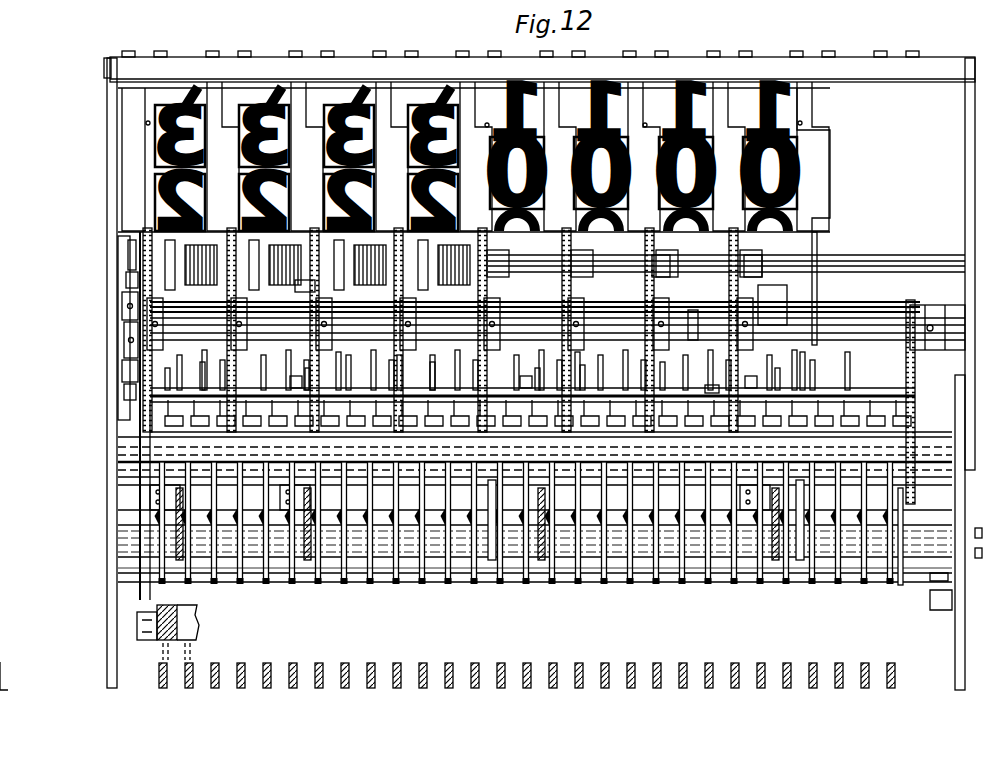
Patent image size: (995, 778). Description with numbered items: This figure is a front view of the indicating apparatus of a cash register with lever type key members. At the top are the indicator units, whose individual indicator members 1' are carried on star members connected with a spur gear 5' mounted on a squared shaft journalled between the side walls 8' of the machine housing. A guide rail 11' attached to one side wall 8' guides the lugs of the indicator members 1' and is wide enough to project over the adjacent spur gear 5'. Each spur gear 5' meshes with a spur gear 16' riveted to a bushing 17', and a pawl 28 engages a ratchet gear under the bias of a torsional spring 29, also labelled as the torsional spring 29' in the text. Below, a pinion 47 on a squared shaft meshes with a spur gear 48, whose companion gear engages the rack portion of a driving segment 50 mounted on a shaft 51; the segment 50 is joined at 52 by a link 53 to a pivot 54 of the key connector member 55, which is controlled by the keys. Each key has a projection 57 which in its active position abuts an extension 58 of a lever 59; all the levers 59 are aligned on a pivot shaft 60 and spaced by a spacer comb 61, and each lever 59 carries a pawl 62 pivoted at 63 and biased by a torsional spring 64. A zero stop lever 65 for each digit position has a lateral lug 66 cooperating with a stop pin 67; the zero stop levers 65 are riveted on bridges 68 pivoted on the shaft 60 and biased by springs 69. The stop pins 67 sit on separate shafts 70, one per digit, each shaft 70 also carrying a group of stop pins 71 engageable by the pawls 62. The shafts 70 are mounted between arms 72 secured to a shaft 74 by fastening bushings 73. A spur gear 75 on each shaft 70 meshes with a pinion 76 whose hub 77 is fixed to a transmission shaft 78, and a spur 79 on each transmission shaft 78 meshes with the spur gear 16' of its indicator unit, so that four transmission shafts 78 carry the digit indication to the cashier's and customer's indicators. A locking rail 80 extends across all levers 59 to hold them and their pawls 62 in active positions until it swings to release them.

The indicator member 1' is at (468, 228).
The spur gear 5' is at (470, 110).
The side wall 8' is at (530, 362).
The guide rail 11' is at (480, 136).
The spur gear 16' is at (433, 251).
The bushing 17' is at (726, 250).
The transfer pawl 28 is at (130, 280).
The carry lever 29 is at (105, 328).
The torsional spring 29' is at (284, 294).
The pinion 47 is at (132, 262).
The spur gear 48 is at (128, 325).
The driving segment 50 is at (128, 372).
The shaft 51 is at (128, 340).
The joint 52 is at (128, 392).
The link 53 is at (150, 424).
The pivot 54 is at (150, 640).
The key connector member 55 is at (200, 622).
The projection 57 is at (290, 668).
The extension 58 is at (535, 596).
The lever 59 is at (372, 584).
The pivot shaft 60 is at (118, 552).
The spacer comb 61 is at (870, 582).
The pawl 62 is at (445, 420).
The pivot 63 is at (118, 462).
The torsional spring 64 is at (170, 494).
The zero stop lever 65 is at (165, 410).
The lateral lug 66 is at (470, 368).
The stop pin 67 is at (507, 391).
The bridge 68 is at (492, 560).
The spring 69 is at (182, 565).
The shaft 70 is at (712, 395).
The stop pin 71 is at (696, 369).
The arm 72 is at (210, 388).
The fastening bushing 73 is at (695, 318).
The shaft 74 is at (880, 318).
The spur gear 75 is at (543, 372).
The pinion 76 is at (186, 330).
The hub 77 is at (340, 322).
The transmission shaft 78 is at (601, 367).
The spur 79 is at (572, 373).
The locking rail 80 is at (910, 585).